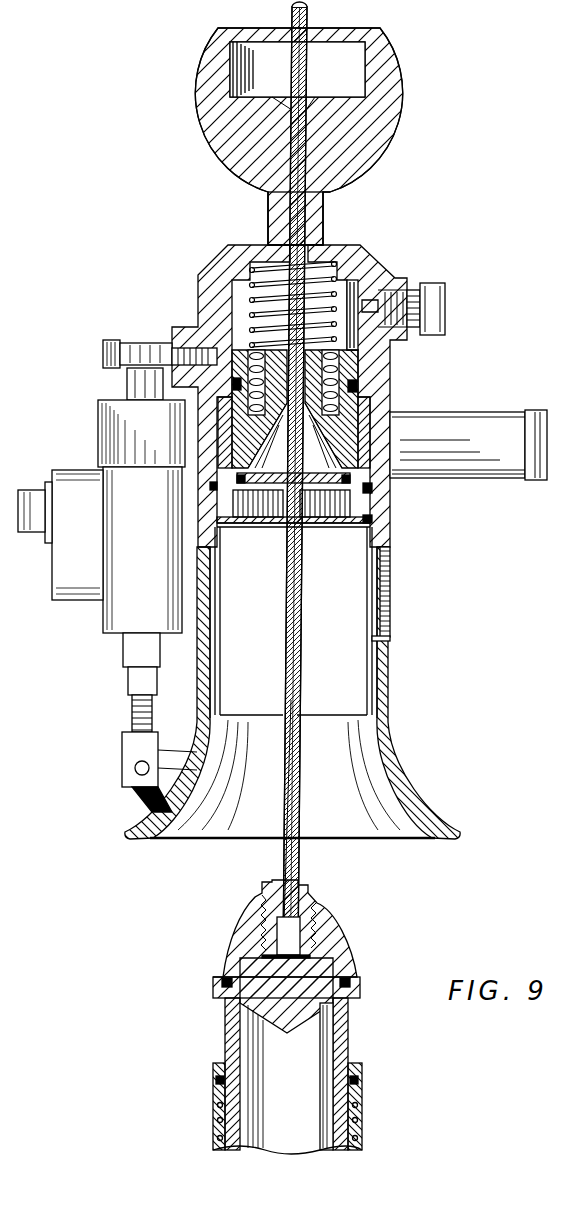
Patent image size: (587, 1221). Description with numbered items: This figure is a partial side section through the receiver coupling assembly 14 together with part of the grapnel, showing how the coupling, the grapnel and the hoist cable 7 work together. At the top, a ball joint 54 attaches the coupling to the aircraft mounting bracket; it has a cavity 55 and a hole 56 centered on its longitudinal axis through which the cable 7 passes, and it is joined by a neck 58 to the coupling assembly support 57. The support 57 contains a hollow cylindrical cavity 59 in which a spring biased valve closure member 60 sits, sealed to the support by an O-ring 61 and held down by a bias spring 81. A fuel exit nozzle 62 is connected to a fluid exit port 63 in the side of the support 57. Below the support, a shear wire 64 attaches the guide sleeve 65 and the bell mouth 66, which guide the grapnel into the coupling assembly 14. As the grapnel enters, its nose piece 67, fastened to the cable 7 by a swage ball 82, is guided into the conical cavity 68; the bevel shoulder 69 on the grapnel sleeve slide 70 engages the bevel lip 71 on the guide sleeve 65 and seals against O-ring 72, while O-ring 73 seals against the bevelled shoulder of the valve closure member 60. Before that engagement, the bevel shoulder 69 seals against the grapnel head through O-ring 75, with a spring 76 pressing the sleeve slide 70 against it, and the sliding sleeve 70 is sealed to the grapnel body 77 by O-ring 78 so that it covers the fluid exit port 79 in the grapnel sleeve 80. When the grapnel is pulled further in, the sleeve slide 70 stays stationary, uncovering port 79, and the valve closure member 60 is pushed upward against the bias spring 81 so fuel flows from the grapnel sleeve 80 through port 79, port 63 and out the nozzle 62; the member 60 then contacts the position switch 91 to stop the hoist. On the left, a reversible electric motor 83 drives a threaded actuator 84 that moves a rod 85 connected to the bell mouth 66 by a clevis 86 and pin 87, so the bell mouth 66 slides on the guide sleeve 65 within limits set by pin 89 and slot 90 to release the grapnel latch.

The cable 7 is at (297, 853).
The coupling assembly 14 is at (418, 657).
The ball joint 54 is at (400, 122).
The cavity 55 is at (340, 73).
The hole 56 is at (308, 152).
The coupling assembly support 57 is at (380, 270).
The neck 58 is at (323, 223).
The hollow cylindrical cavity 59 is at (350, 343).
The valve closure member 60 is at (350, 412).
The O-ring 61 is at (360, 385).
The fuel exit nozzle 62 is at (514, 453).
The fluid exit port 63 is at (387, 423).
The shear wire 64 is at (390, 502).
The guide sleeve 65 is at (372, 537).
The bell mouth 66 is at (410, 807).
The grapnel nose piece 67 is at (303, 883).
The conical cavity 68 is at (327, 471).
The bevel shoulder 69 is at (357, 977).
The grapnel sleeve slide 70 is at (350, 1048).
The bevel lip 71 is at (363, 533).
The O-ring 72 is at (360, 523).
The O-ring 73 is at (363, 493).
The O-ring 75 is at (335, 970).
The spring 76 is at (342, 1133).
The grapnel body 77 is at (362, 1132).
The O-ring 78 is at (362, 1083).
The fluid exit port 79 is at (333, 1023).
The grapnel sleeve 80 is at (327, 1082).
The bias spring 81 is at (248, 283).
The swage ball 82 is at (283, 938).
The reversible electric motor 83 is at (88, 535).
The threaded actuator 84 is at (130, 707).
The rod 85 is at (122, 742).
The clevis 86 is at (152, 808).
The pin 87 is at (135, 768).
The pin 89 is at (383, 637).
The slot 90 is at (387, 607).
The position switch 91 is at (445, 300).